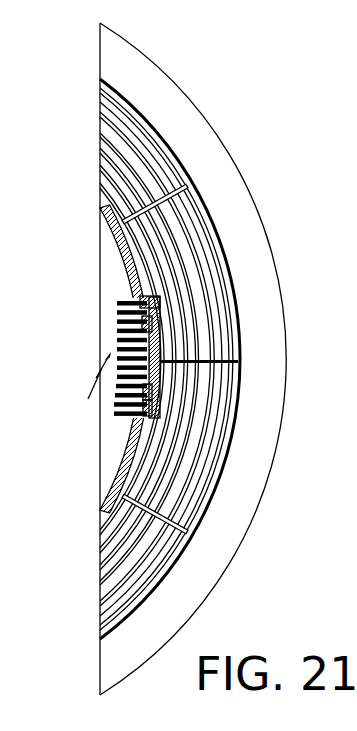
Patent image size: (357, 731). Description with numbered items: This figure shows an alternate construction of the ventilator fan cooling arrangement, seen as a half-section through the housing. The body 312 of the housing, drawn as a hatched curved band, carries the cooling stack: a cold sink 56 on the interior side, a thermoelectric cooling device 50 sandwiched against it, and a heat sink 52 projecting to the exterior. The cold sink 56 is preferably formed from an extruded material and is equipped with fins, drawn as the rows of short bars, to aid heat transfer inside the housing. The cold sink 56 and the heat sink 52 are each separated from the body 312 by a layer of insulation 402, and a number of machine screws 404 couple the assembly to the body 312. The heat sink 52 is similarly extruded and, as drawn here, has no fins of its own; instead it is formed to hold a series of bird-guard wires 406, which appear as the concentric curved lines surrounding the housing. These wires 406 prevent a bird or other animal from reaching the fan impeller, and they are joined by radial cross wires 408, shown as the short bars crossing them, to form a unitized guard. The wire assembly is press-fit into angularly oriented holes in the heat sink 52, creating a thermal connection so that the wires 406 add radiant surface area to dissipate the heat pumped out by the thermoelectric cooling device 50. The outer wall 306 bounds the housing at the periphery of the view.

The thermoelectric cooling device 50 is at (120, 349).
The heat sink 52 is at (162, 350).
The cold sink 56 is at (120, 320).
The outer wall 306 is at (282, 422).
The body 312 is at (110, 492).
The insulation 402 is at (138, 413).
The machine screws 404 is at (120, 398).
The bird-guard wires 406 is at (213, 472).
The radial cross wires 408 is at (195, 535).